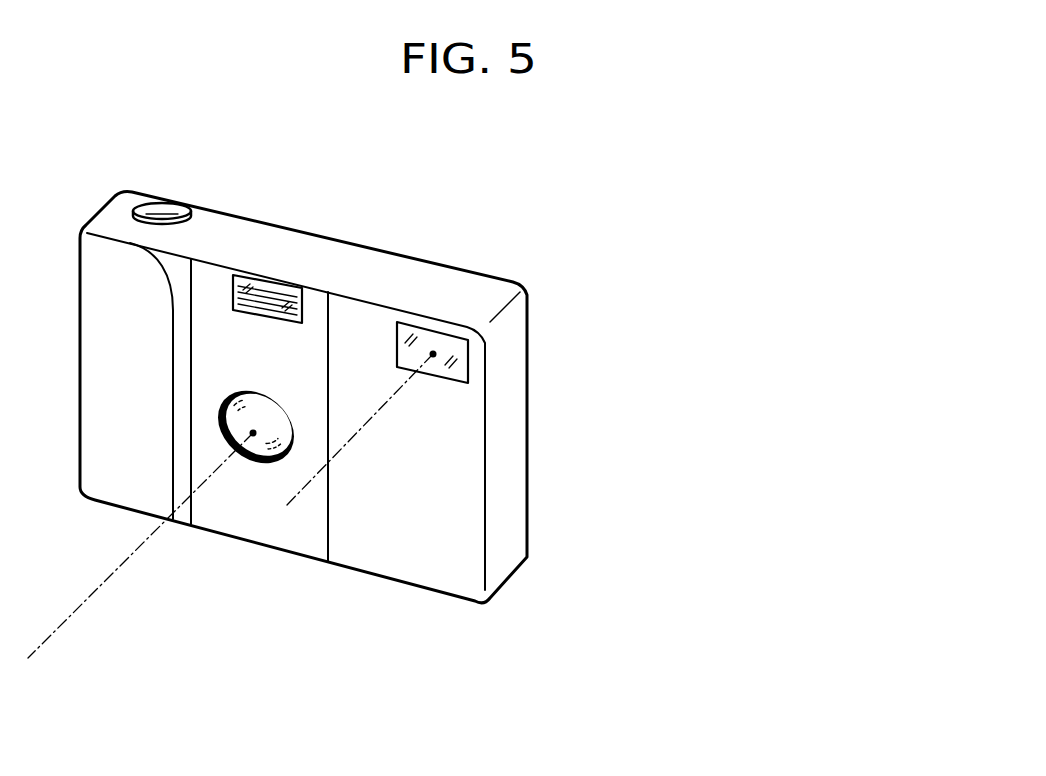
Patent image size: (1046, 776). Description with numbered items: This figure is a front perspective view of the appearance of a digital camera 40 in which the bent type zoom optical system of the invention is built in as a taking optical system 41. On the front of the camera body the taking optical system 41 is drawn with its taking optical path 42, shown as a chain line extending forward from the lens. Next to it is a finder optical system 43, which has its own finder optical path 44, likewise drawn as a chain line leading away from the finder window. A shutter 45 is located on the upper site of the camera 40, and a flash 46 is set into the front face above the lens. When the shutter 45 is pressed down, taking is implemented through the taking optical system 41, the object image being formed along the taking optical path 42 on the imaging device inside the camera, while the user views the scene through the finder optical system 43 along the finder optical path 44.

The digital camera 40 is at (551, 258).
The taking optical system 41 is at (255, 452).
The taking optical path 42 is at (45, 645).
The finder optical system 43 is at (453, 348).
The finder optical path 44 is at (377, 412).
The shutter 45 is at (167, 207).
The flash 46 is at (268, 290).